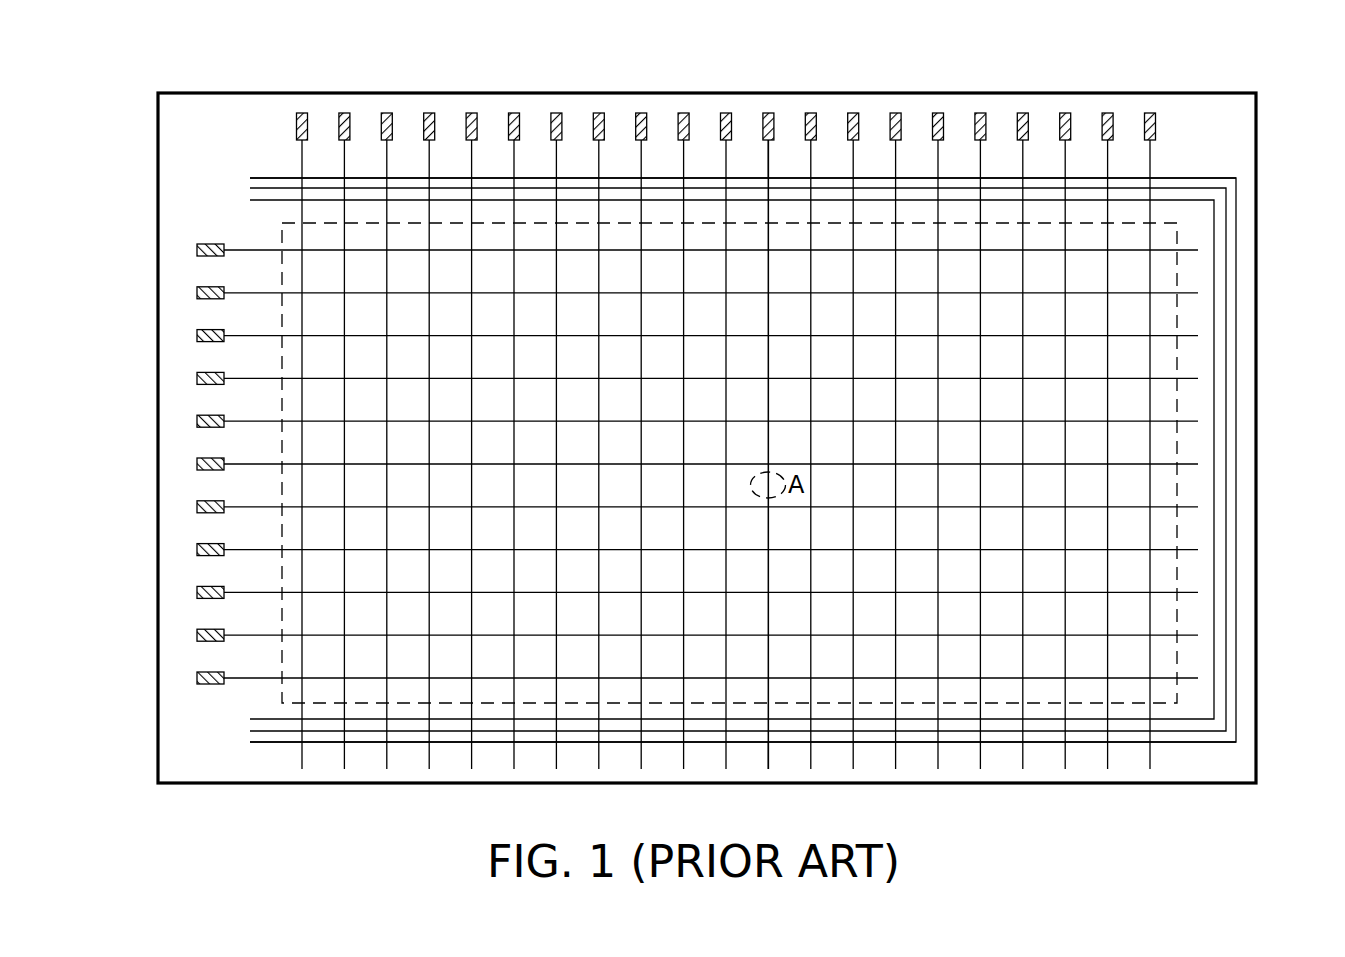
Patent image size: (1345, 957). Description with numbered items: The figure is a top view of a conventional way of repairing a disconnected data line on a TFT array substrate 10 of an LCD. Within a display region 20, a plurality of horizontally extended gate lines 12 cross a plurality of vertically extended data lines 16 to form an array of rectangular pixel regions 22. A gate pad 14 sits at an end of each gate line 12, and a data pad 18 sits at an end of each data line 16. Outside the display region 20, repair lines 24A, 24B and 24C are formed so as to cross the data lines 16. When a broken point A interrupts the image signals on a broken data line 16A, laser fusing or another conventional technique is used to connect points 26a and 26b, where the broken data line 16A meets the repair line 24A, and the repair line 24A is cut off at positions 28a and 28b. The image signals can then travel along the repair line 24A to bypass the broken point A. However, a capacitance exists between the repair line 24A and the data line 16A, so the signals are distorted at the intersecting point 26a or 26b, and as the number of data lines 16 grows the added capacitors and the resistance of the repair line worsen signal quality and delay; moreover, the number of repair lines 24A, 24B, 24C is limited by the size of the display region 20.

The TFT array substrate 10 is at (1070, 78).
The gate line 12 is at (247, 678).
The gate pad 14 is at (208, 243).
The data line 16 is at (387, 163).
The broken data line 16A is at (768, 690).
The data pad 18 is at (292, 127).
The display region 20 is at (1178, 643).
The pixel region 22 is at (412, 613).
The repair line 24A is at (1236, 280).
The repair line 24B is at (1226, 367).
The repair line 24C is at (1214, 450).
The intersecting point 26a is at (768, 178).
The intersecting point 26b is at (768, 742).
The cut position 28a is at (750, 177).
The cut position 28b is at (749, 742).